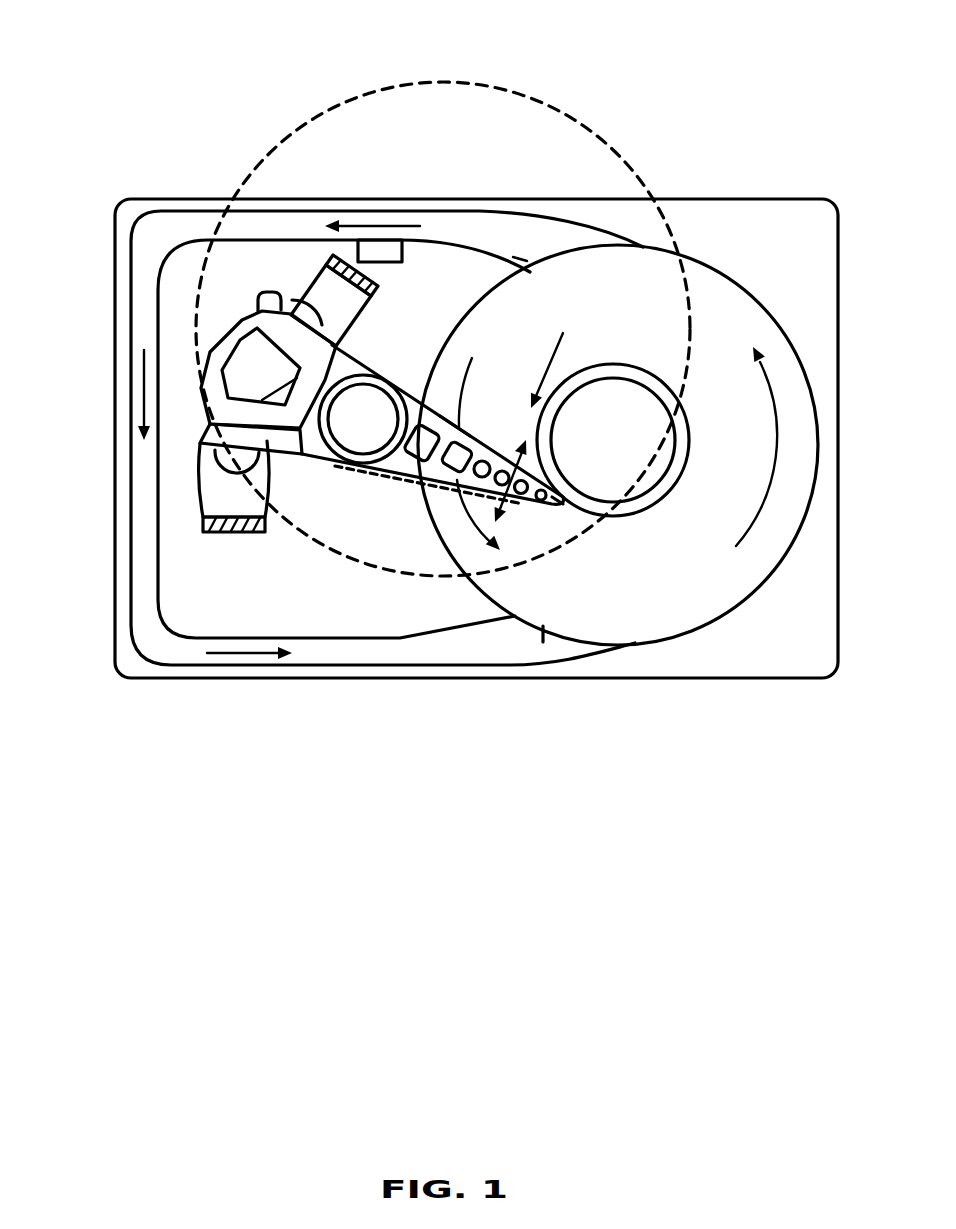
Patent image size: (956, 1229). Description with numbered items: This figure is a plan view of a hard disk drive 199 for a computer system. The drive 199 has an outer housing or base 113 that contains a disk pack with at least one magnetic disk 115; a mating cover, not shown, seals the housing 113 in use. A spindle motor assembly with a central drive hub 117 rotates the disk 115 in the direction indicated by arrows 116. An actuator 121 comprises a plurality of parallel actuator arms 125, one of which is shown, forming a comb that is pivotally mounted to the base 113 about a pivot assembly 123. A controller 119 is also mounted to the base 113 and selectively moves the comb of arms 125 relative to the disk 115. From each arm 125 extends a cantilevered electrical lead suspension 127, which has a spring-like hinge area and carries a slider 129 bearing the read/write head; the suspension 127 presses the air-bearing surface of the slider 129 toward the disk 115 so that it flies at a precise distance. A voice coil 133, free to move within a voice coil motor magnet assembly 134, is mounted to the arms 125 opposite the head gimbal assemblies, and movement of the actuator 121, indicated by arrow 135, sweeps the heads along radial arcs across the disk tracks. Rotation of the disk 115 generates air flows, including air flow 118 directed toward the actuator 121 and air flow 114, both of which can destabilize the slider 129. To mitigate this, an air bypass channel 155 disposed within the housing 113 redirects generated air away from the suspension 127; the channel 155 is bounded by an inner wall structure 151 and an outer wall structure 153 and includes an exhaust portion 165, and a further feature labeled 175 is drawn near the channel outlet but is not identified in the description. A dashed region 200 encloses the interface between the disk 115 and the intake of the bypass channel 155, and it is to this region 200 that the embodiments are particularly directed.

The hard disk drive 199 is at (798, 94).
The region 200 is at (545, 105).
The outer housing 113 is at (687, 199).
The magnetic disk 115 is at (700, 272).
The central drive hub 117 is at (620, 364).
The air flow 118 is at (556, 352).
The arrows 116 is at (472, 358).
The air flow 114 is at (385, 222).
The air bypass channel 155 is at (336, 456).
The outer wall structure 153 is at (131, 553).
The inner wall structure 151 is at (157, 590).
The exhaust portion 165 is at (513, 257).
The channel outlet 175 is at (547, 642).
The controller 119 is at (387, 262).
The actuator arm 125 is at (412, 394).
The electrical lead suspension 127 is at (458, 428).
The slider 129 is at (543, 495).
The arrow 135 is at (492, 513).
The voice coil motor magnet assembly 134 is at (317, 283).
The voice coil 133 is at (233, 318).
The pivot assembly 123 is at (357, 455).
The actuator 121 is at (283, 548).